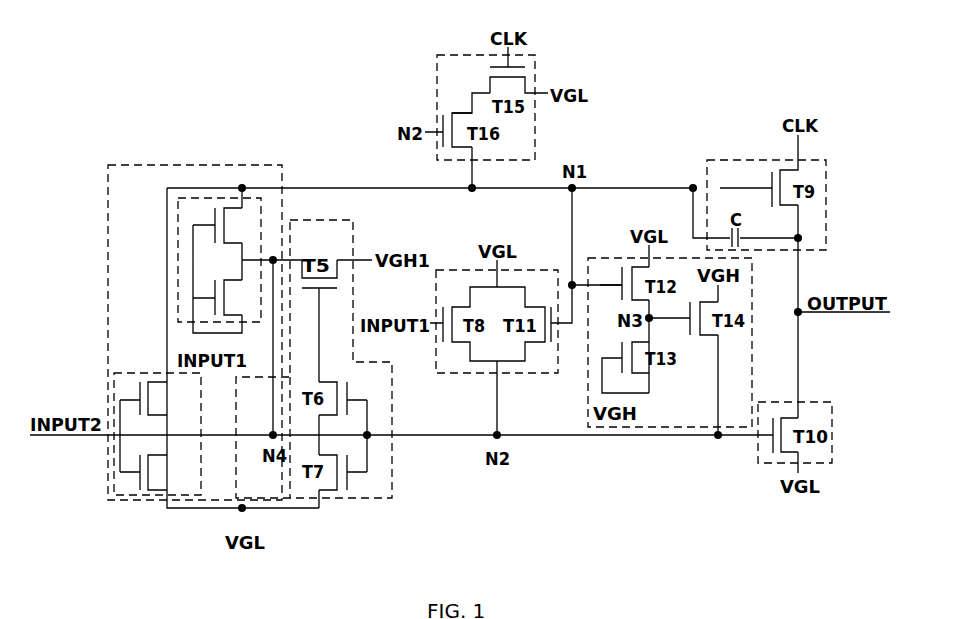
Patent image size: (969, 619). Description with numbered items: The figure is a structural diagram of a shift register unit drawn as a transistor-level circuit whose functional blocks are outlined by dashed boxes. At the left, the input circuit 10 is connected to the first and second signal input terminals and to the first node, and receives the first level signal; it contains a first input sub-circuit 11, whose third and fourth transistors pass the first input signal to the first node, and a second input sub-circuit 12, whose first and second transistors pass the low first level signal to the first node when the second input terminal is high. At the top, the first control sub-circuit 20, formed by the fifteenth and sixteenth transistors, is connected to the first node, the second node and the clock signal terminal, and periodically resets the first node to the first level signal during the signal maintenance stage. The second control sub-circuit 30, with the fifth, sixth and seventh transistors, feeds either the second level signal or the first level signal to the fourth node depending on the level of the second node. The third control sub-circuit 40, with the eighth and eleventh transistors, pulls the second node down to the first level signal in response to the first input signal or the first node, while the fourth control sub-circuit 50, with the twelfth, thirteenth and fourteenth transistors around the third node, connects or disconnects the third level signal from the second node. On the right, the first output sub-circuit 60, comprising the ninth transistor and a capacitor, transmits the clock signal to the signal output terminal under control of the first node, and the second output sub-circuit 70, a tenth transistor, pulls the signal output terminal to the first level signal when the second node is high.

The input circuit 10 is at (192, 165).
The first input sub-circuit 11 is at (179, 260).
The second input sub-circuit 12 is at (132, 373).
The first control sub-circuit 20 is at (435, 88).
The second control sub-circuit 30 is at (335, 220).
The third control sub-circuit 40 is at (522, 270).
The fourth control sub-circuit 50 is at (608, 257).
The first output sub-circuit 60 is at (762, 160).
The second output sub-circuit 70 is at (808, 402).